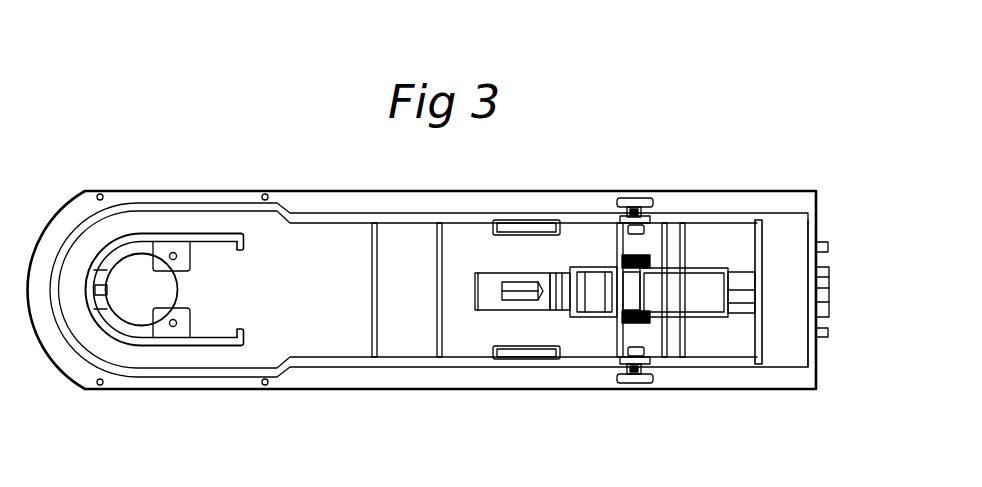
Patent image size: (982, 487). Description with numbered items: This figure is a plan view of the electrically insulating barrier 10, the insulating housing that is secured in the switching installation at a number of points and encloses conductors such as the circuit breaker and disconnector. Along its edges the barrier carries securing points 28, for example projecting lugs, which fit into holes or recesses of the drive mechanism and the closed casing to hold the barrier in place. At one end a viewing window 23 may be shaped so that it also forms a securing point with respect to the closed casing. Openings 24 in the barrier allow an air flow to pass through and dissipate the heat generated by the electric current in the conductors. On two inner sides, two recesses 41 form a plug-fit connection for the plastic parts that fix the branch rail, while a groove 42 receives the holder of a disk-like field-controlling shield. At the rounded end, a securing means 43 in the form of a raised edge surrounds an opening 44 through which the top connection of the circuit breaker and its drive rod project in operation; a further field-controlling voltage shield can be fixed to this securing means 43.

The electrically insulating barrier 10 is at (721, 136).
The viewing window 23 is at (830, 272).
The openings 24 is at (780, 237).
The securing points 28 is at (107, 194).
The recesses 41 is at (640, 198).
The groove 42 is at (516, 220).
The securing means 43 is at (100, 250).
The opening 44 is at (118, 305).